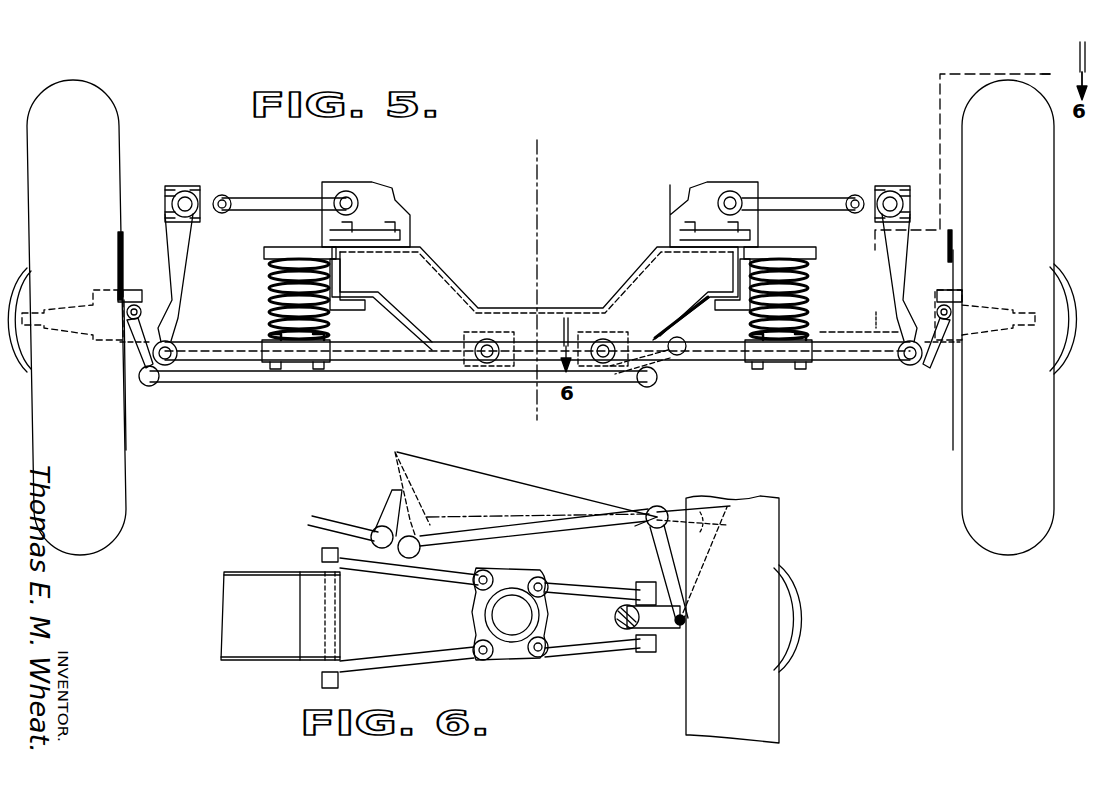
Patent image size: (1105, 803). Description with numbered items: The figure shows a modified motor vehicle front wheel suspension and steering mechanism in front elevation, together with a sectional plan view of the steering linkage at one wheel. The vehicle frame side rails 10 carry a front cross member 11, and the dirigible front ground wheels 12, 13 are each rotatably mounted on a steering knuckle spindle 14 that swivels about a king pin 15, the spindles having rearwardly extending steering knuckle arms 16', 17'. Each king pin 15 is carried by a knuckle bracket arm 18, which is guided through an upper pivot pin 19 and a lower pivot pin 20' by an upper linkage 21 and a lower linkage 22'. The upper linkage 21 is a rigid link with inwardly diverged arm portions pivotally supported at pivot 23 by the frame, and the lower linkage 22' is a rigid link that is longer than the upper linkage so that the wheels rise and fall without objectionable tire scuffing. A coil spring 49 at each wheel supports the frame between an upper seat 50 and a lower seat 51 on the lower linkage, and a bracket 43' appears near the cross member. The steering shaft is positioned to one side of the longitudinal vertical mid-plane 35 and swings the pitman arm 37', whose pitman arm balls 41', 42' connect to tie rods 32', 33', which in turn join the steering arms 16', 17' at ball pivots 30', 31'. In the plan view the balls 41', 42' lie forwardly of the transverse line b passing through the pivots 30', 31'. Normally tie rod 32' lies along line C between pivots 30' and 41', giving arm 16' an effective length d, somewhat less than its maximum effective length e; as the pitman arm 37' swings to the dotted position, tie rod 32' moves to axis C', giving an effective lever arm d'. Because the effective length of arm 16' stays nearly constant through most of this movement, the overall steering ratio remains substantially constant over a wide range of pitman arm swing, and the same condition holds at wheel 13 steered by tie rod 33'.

In FIG. 5, the vehicle frame side rails 10 is at (345, 316).
In FIG. 5, the front cross member 11 is at (470, 252).
In FIG. 6, the front cross member 11 is at (258, 572).
In FIG. 5, the front supporting ground wheel 12 is at (975, 110).
In FIG. 6, the front supporting ground wheel 12 is at (765, 695).
In FIG. 5, the front supporting ground wheel 13 is at (120, 132).
In FIG. 5, the steering knuckle spindle 14 is at (75, 310).
In FIG. 5, the king pin 15 is at (138, 288).
In FIG. 6, the king pin 15 is at (690, 612).
In FIG. 5, the steering knuckle arm 16' is at (961, 329).
In FIG. 6, the steering knuckle arm 16' is at (649, 572).
In FIG. 5, the steering knuckle arm 17' is at (110, 359).
In FIG. 5, the knuckle bracket arm 18 is at (180, 265).
In FIG. 6, the knuckle bracket arm 18 is at (612, 618).
In FIG. 5, the upper pivot pin 19 is at (185, 198).
In FIG. 5, the lower pivot pin 20' is at (537, 354).
In FIG. 6, the lower pivot pin 20' is at (600, 611).
In FIG. 5, the upper linkage 21 is at (255, 195).
In FIG. 5, the lower linkage 22' is at (537, 374).
In FIG. 6, the lower linkage 22' is at (400, 618).
In FIG. 5, the pivot 23 is at (348, 200).
In FIG. 5, the ball pivot 30' is at (961, 364).
In FIG. 6, the ball pivot 30' is at (635, 529).
In FIG. 5, the ball pivot 31' is at (120, 385).
In FIG. 5, the tie rod 32' is at (860, 319).
In FIG. 6, the tie rod 32' is at (534, 514).
In FIG. 5, the tie rod 33' is at (398, 392).
In FIG. 6, the tie rod 33' is at (326, 513).
In FIG. 5, the longitudinal vertical mid-plane 35 is at (539, 188).
In FIG. 6, the pitman arm 37' is at (419, 486).
In FIG. 5, the pitman arm ball 41' is at (659, 335).
In FIG. 6, the pitman arm ball 41' is at (426, 522).
In FIG. 5, the pitman arm ball 42' is at (632, 386).
In FIG. 6, the pitman arm ball 42' is at (369, 516).
In FIG. 5, the frame bracket 43' is at (546, 339).
In FIG. 5, the coil spring 49 is at (266, 290).
In FIG. 6, the coil spring 49 is at (520, 592).
In FIG. 5, the upper seat 50 is at (292, 232).
In FIG. 5, the lower seat 51 is at (782, 368).
In FIG. 6, the lower seat 51 is at (475, 612).
In FIG. 6, the transverse line b is at (527, 484).
In FIG. 6, the line C is at (638, 504).
In FIG. 6, the axis C' is at (538, 491).
In FIG. 6, the effective length d is at (693, 489).
In FIG. 6, the effective lever arm d' is at (703, 563).
In FIG. 6, the maximum effective length e is at (700, 524).